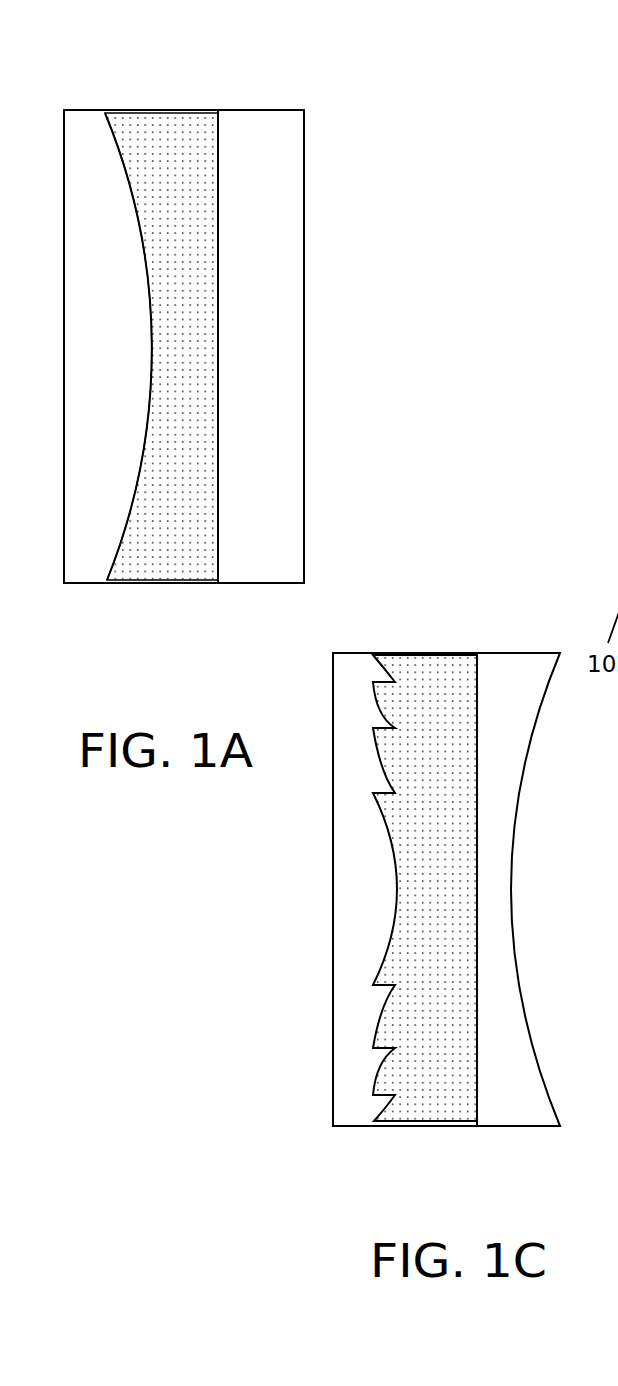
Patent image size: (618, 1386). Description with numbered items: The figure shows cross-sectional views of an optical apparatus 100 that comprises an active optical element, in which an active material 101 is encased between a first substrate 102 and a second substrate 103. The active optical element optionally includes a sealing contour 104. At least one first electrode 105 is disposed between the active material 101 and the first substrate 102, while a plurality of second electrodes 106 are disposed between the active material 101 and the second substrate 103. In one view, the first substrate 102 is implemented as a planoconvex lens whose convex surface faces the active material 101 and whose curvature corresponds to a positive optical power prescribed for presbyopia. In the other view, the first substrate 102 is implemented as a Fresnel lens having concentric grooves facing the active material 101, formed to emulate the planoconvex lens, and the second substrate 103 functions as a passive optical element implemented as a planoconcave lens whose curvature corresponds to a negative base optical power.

In FIG. 1A, the optical apparatus 100 is at (347, 512).
In FIG. 1A, the active material 101 is at (188, 543).
In FIG. 1C, the active material 101 is at (443, 1083).
In FIG. 1A, the first substrate 102 is at (92, 563).
In FIG. 1C, the first substrate 102 is at (345, 1107).
In FIG. 1A, the second substrate 103 is at (275, 563).
In FIG. 1C, the second substrate 103 is at (529, 1107).
In FIG. 1A, the sealing contour 104 is at (165, 110).
In FIG. 1A, the first electrode 105 is at (150, 287).
In FIG. 1A, the second electrodes 106 is at (617, 348).